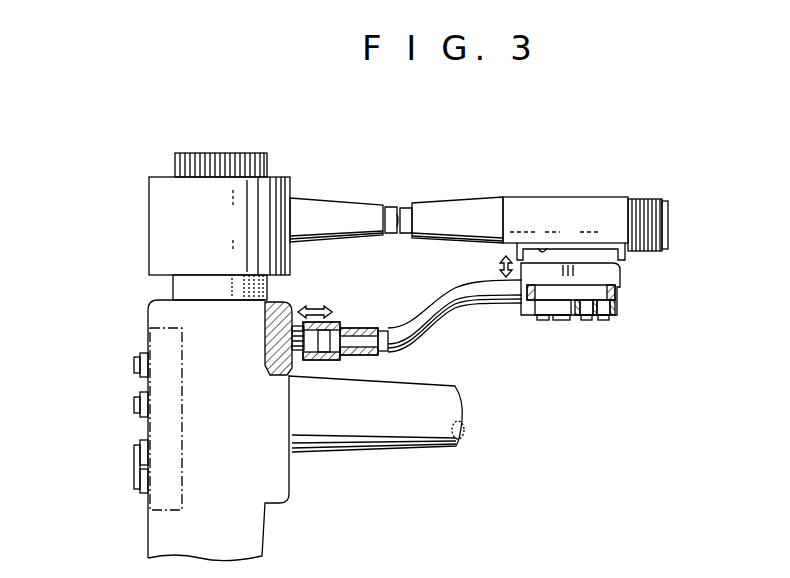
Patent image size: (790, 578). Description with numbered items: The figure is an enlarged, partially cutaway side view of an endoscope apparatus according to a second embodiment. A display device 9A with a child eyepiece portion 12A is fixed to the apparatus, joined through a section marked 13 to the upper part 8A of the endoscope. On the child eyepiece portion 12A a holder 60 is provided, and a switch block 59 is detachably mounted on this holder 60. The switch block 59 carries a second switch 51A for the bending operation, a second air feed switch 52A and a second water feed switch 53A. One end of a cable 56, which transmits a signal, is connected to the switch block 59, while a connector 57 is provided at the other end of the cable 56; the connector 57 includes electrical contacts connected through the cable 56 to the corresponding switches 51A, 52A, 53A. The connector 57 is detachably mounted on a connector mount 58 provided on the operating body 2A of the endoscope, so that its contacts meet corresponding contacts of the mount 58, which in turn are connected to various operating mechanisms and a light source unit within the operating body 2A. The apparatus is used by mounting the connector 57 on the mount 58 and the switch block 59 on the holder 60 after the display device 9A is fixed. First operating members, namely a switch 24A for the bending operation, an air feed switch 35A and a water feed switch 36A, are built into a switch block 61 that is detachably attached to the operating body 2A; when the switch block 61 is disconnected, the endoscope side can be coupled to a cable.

The operating body 2A is at (283, 484).
The upper housing / neck 8A is at (175, 290).
The display device 9A is at (472, 178).
The child eyepiece portion 12A is at (593, 206).
The joint 13 is at (399, 210).
The switch for the bending operation 24A is at (134, 468).
The air feed switch 35A is at (134, 404).
The water feed switch 36A is at (134, 363).
The second switch for the bending operation 51A is at (540, 314).
The second air feed switch 52A is at (588, 319).
The second water feed switch 53A is at (615, 321).
The cable 56 is at (428, 338).
The connector 57 is at (338, 322).
The connector mount 58 is at (272, 352).
The switch block 59 is at (612, 281).
The holder 60 is at (542, 248).
The switch block 61 is at (183, 452).